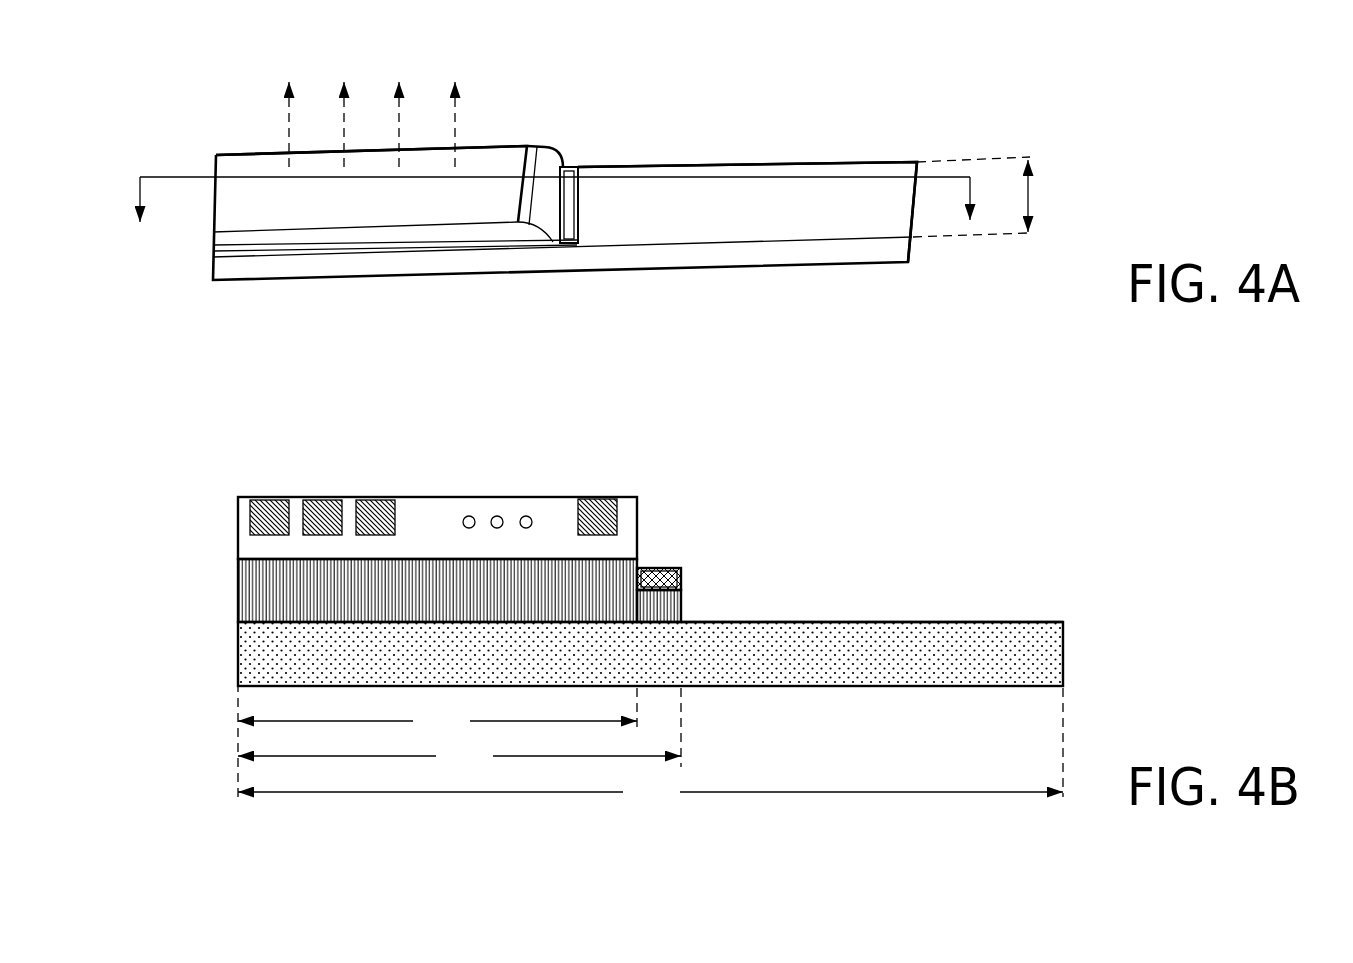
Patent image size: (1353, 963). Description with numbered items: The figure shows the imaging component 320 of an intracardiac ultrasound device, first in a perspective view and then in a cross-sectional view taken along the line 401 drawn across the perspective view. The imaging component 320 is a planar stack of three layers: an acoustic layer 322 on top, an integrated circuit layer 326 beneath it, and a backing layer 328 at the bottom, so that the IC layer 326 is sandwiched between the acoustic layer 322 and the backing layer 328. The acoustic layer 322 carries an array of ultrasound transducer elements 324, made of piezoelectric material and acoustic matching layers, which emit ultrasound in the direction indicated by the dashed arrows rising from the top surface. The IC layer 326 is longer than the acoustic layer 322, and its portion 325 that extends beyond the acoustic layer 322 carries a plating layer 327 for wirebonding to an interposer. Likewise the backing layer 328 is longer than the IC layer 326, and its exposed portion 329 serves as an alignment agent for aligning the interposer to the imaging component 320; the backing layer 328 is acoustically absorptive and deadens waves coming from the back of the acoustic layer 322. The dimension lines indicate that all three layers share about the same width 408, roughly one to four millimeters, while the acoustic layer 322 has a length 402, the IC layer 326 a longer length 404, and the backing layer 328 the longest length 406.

In FIG. 4A, the imaging component 320 is at (1008, 108).
In FIG. 4A, the acoustic layer 322 is at (261, 164).
In FIG. 4B, the acoustic layer 322 is at (238, 525).
In FIG. 4A, the ultrasound transducer elements 324 is at (208, 258).
In FIG. 4B, the ultrasound transducer elements 324 is at (270, 500).
In FIG. 4A, the portion of the IC layer 325 is at (567, 163).
In FIG. 4B, the portion of the IC layer 325 is at (665, 560).
In FIG. 4A, the integrated circuit (IC) layer 326 is at (819, 168).
In FIG. 4B, the integrated circuit (IC) layer 326 is at (238, 590).
In FIG. 4A, the plating layer 327 is at (574, 172).
In FIG. 4B, the plating layer 327 is at (683, 578).
In FIG. 4B, the backing layer 328 is at (238, 655).
In FIG. 4B, the portion of the backing layer 329 is at (813, 616).
In FIG. 4A, the line 401 is at (167, 177).
In FIG. 4B, the length of the acoustic layer 402 is at (437, 740).
In FIG. 4B, the length of the IC layer 404 is at (459, 729).
In FIG. 4B, the length of the backing layer 406 is at (650, 748).
In FIG. 4A, the width 408 is at (996, 197).